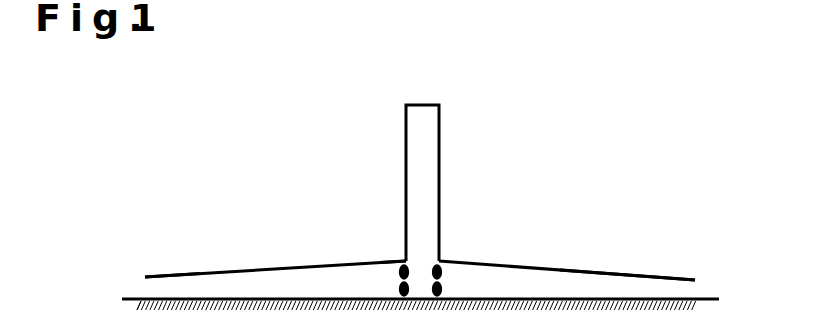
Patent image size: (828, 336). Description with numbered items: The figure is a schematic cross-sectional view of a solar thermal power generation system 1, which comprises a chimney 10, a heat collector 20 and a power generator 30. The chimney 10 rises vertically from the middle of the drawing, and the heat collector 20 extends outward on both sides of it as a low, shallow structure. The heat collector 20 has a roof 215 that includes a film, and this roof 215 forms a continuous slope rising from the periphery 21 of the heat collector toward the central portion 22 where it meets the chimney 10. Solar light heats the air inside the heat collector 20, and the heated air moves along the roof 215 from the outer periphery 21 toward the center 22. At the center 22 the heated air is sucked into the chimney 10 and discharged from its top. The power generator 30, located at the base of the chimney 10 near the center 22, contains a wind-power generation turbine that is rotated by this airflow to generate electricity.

The solar thermal power generation system 1 is at (510, 168).
The chimney 10 is at (405, 158).
The heat collector 20 is at (257, 259).
The periphery of the heat collector 21 is at (153, 274).
The central portion of the heat collector 22 is at (404, 260).
The roof 215 is at (583, 270).
The power generator 30 is at (441, 278).